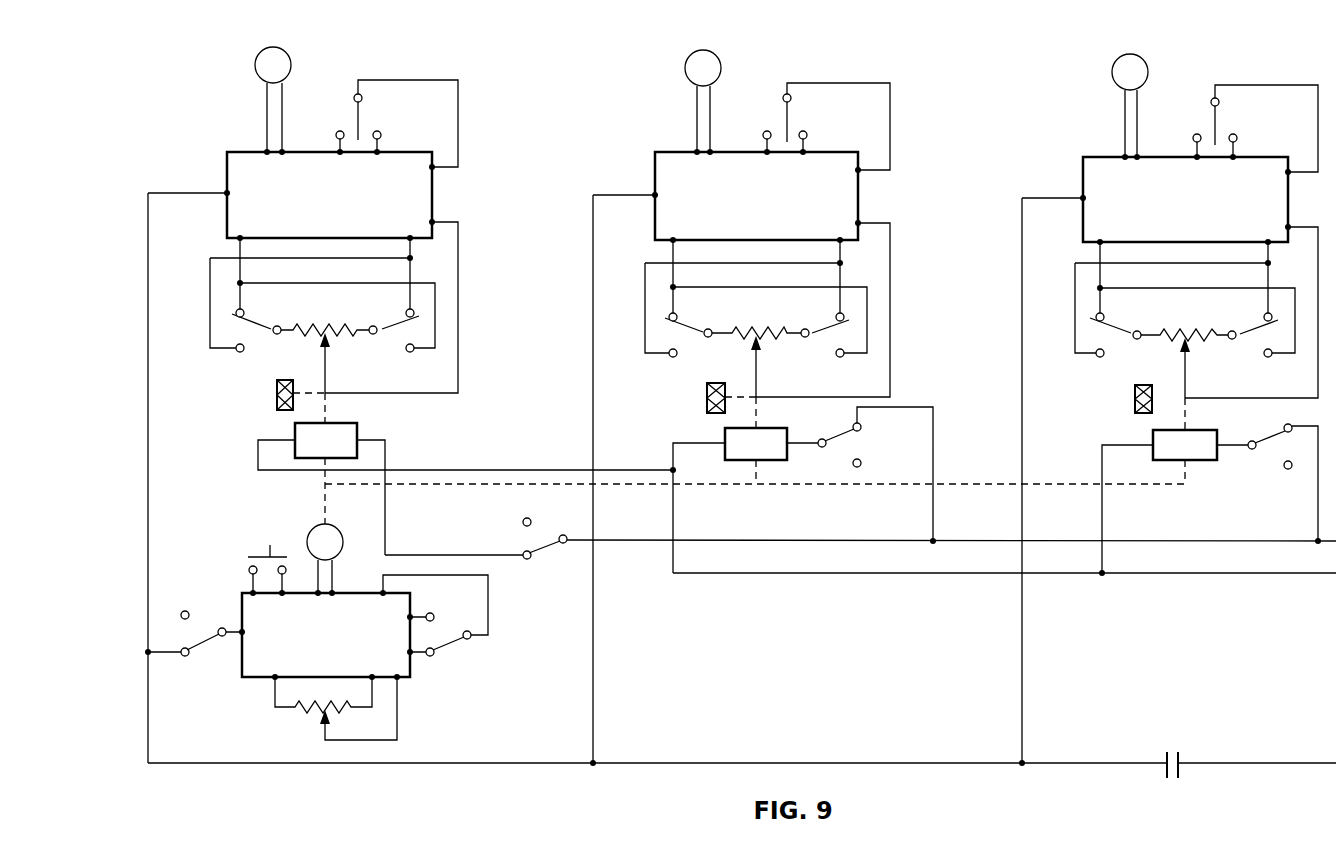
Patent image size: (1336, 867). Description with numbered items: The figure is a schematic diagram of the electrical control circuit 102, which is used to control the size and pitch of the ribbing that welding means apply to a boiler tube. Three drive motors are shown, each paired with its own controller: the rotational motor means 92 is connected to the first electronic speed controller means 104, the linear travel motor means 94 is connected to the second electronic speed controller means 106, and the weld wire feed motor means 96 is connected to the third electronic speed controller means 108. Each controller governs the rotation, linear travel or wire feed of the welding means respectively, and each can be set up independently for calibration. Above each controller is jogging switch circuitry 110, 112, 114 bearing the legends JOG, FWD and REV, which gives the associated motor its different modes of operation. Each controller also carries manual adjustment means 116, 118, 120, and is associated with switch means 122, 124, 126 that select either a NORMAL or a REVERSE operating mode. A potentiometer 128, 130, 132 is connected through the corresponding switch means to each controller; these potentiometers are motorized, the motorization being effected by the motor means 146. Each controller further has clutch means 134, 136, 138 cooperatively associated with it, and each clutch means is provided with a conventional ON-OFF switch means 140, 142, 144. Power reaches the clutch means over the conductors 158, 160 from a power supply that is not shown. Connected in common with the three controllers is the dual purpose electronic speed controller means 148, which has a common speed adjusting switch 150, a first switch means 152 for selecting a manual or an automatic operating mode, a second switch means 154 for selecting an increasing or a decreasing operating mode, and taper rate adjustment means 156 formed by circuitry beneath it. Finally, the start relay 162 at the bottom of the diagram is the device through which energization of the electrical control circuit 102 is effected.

The rotational motor means 92 is at (256, 63).
The linear travel motor means 94 is at (686, 67).
The weld wire feed motor means 96 is at (1112, 70).
The electrical control circuit 102 is at (781, 680).
The first electronic speed controller means 104 is at (238, 152).
The second electronic speed controller means 106 is at (665, 152).
The third electronic speed controller means 108 is at (1098, 157).
The jogging switch circuitry 110 is at (407, 73).
The jogging switch circuitry 112 is at (832, 76).
The jogging switch circuitry 114 is at (1260, 77).
The manual adjustment means 116 is at (277, 396).
The manual adjustment means 118 is at (707, 398).
The manual adjustment means 120 is at (1135, 398).
The switch means 122 is at (378, 333).
The switch means 124 is at (808, 336).
The switch means 126 is at (1236, 336).
The potentiometer 128 is at (333, 317).
The potentiometer 130 is at (765, 320).
The potentiometer 132 is at (1193, 320).
The clutch means 134 is at (314, 453).
The clutch means 136 is at (744, 455).
The clutch means 138 is at (1173, 457).
The ON-OFF switch means 140 is at (525, 551).
The ON-OFF switch means 142 is at (836, 430).
The ON-OFF switch means 144 is at (1262, 432).
The motor means 146 is at (341, 530).
The dual purpose electronic speed controller means 148 is at (388, 680).
The common speed adjusting switch 150 is at (243, 565).
The first switch means 152 is at (208, 640).
The second switch means 154 is at (457, 650).
The taper rate adjustment means 156 is at (301, 722).
The conductor 158 is at (856, 541).
The conductor 160 is at (922, 576).
The start relay 162 is at (1181, 752).